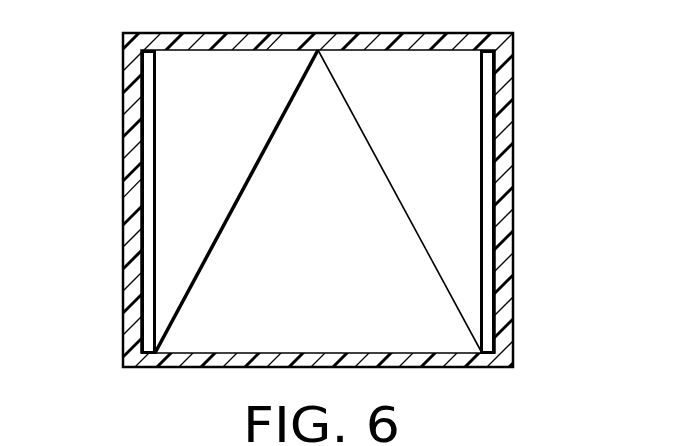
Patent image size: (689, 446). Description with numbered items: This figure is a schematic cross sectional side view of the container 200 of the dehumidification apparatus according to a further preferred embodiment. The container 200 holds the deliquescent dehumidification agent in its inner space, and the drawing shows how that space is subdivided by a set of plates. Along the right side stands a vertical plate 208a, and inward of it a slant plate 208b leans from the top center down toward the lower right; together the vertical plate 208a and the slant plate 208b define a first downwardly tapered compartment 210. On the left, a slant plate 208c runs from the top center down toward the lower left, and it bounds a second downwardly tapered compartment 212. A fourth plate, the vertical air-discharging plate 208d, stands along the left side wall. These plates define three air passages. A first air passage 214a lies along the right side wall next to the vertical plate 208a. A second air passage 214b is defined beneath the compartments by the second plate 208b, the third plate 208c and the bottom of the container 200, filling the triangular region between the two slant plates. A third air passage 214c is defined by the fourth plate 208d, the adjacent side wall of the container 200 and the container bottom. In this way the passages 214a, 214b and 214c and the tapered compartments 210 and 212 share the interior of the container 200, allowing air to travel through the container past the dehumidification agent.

The container 200 is at (503, 185).
The first air passage 214a is at (487, 249).
The second air passage 214b is at (364, 297).
The third air passage 214c is at (148, 243).
The vertical plate 208a is at (481, 103).
The slant plate 208b is at (386, 178).
The slant plate 208c is at (243, 196).
The vertical plate 208d is at (157, 93).
The first downwardly tapered compartment 210 is at (458, 161).
The second downwardly tapered compartment 212 is at (232, 160).